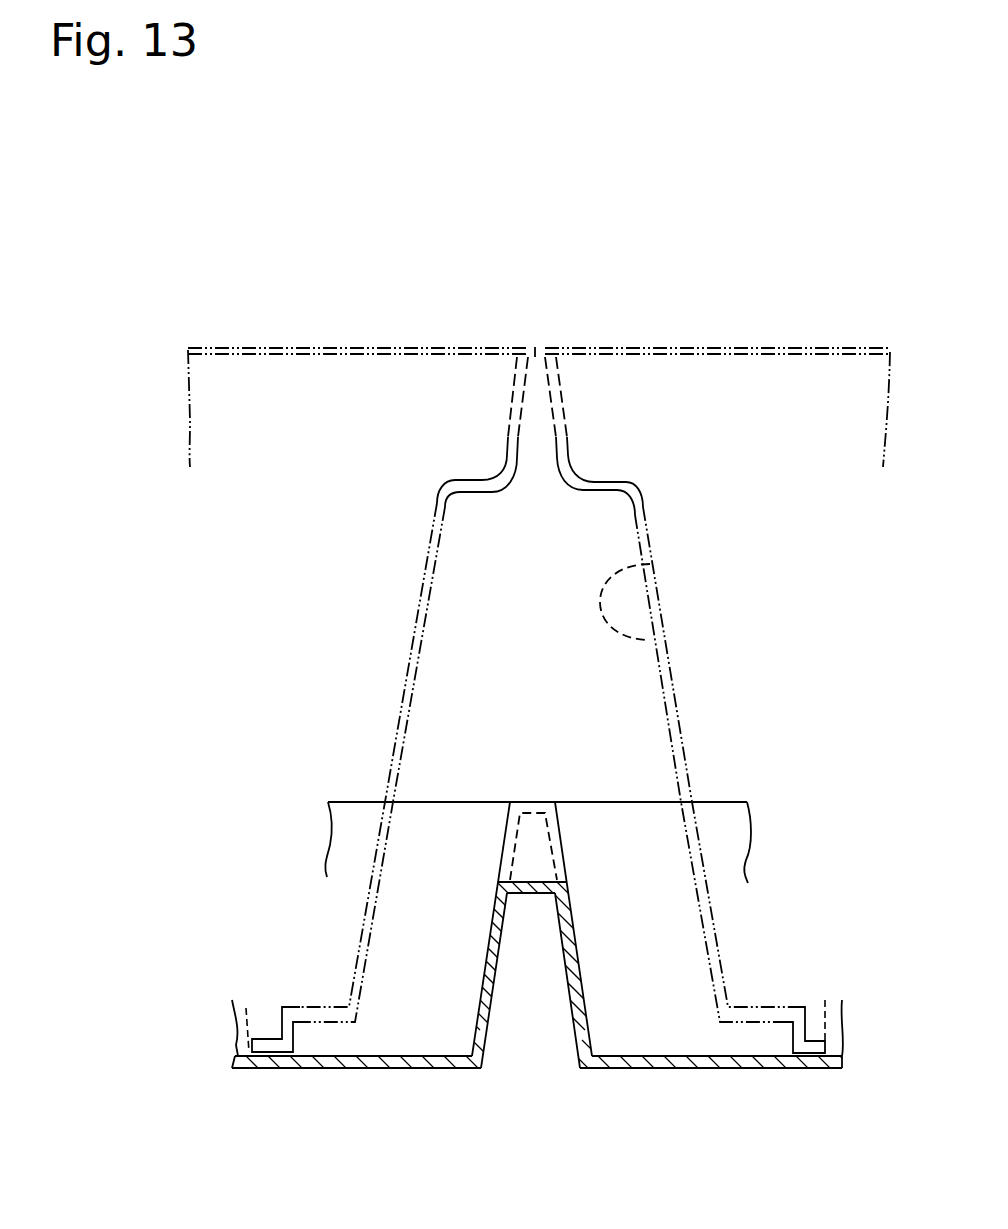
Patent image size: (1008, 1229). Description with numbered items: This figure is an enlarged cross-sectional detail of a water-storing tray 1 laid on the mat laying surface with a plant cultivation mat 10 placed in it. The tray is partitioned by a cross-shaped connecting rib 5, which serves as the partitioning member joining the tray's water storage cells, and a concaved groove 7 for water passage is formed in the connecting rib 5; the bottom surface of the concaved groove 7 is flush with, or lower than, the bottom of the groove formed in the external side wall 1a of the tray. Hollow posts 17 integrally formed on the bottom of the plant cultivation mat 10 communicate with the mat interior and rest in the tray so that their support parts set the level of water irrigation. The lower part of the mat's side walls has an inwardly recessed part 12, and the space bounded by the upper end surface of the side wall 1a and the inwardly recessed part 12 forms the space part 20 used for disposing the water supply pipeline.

The water-storing tray 1 is at (697, 1070).
The side wall 1a is at (732, 827).
The connecting rib 5 is at (347, 800).
The concaved groove 7 is at (535, 860).
The plant cultivation mat 10 is at (470, 400).
The inwardly recessed part 12 is at (650, 564).
The hollow post 17 is at (278, 1043).
The space part 20 is at (478, 597).